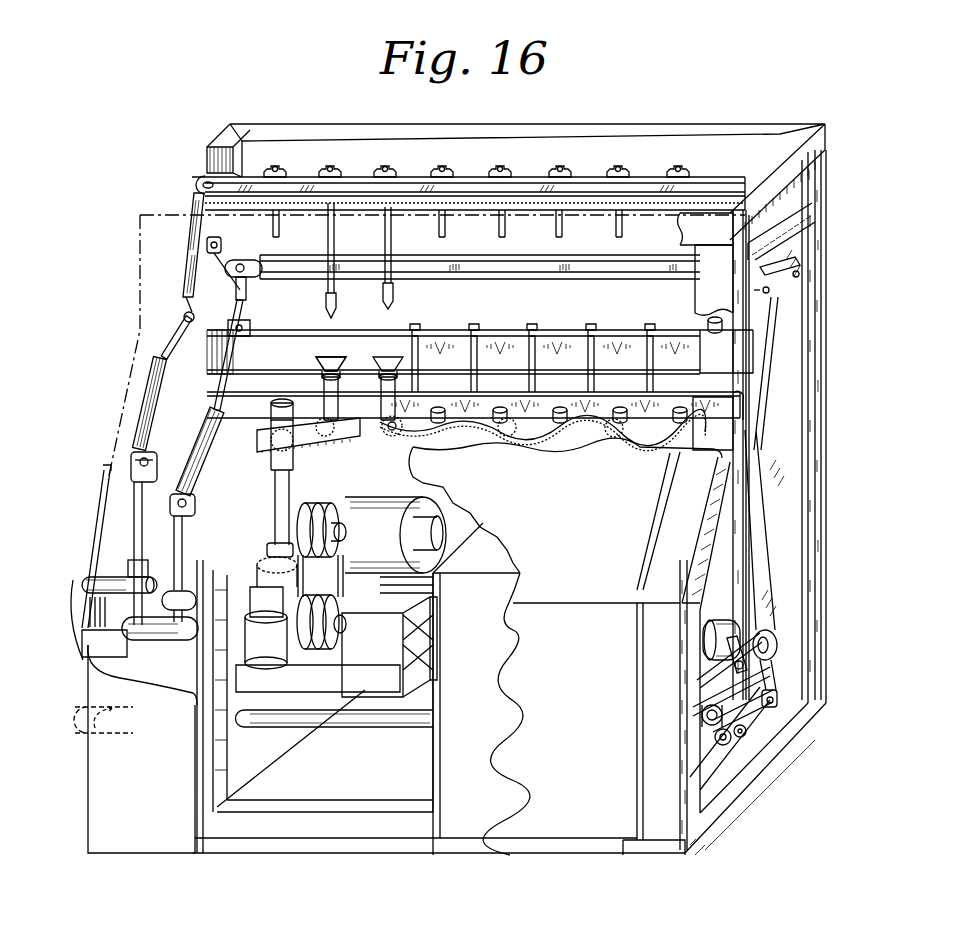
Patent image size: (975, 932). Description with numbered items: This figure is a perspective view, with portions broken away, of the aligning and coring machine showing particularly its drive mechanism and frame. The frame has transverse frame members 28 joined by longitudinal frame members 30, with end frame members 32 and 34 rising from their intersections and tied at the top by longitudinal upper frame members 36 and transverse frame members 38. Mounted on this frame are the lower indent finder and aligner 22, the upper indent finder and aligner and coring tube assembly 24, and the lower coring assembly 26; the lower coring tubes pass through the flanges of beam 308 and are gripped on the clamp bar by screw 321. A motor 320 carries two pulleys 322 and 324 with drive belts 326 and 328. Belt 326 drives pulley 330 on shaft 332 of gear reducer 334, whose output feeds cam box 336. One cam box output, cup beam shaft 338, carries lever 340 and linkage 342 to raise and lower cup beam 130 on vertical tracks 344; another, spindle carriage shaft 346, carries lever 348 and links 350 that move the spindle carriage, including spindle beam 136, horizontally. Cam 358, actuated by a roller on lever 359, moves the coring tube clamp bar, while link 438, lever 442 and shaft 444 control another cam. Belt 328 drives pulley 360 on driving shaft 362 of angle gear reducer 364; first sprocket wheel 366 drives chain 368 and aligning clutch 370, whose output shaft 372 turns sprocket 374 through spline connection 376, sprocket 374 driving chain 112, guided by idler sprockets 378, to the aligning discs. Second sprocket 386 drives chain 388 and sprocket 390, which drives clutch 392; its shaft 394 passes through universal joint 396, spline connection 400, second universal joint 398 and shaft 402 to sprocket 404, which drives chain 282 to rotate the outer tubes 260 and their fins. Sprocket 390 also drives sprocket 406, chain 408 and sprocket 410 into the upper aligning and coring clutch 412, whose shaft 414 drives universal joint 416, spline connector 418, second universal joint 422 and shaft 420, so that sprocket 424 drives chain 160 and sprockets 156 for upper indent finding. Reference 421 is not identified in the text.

The lower indent finder and aligner 22 is at (275, 396).
The upper indent finder and aligner and coring tube assembly 24 is at (405, 246).
The lower coring assembly 26 is at (638, 322).
The transverse frame members 28 is at (725, 805).
The longitudinal frame members 30 is at (446, 852).
The end frame member 32 is at (818, 548).
The end frame member 34 is at (735, 775).
The longitudinal upper frame members 36 is at (663, 128).
The transverse frame members 38 is at (785, 142).
The chain 112 is at (375, 437).
The cup beam 130 is at (540, 412).
The spindle beam 136 is at (411, 268).
The sprocket 156 is at (290, 172).
The drive chain 160 is at (257, 143).
The outer tube 260 is at (336, 250).
The chain 282 is at (235, 287).
The beam 308 is at (494, 345).
The motor 320 is at (420, 505).
The screw 321 is at (268, 332).
The pulley 322 is at (335, 514).
The pulley 324 is at (313, 503).
The drive belt 326 is at (340, 622).
The drive belt 328 is at (339, 533).
The pulley 330 is at (332, 645).
The shaft 332 is at (338, 640).
The gear reducer 334 is at (434, 640).
The cam box 336 is at (472, 675).
The cup beam shaft 338 is at (702, 715).
The lever 340 is at (715, 735).
The linkage 342 is at (737, 602).
The tracks 344 is at (672, 452).
The spindle carriage shaft 346 is at (740, 640).
The lever 348 is at (697, 538).
The links 350 is at (775, 262).
The cam 358 is at (748, 672).
The lever 359 is at (765, 720).
The pulley 360 is at (336, 670).
The driving shaft 362 is at (296, 690).
The angle gear reducer 364 is at (262, 660).
The first sprocket wheel 366 is at (165, 642).
The chain 368 is at (275, 512).
The aligning clutch 370 is at (343, 548).
The output shaft 372 is at (272, 545).
The sprocket 374 is at (307, 437).
The spline connection 376 is at (296, 468).
The idler sprockets 378 is at (288, 478).
The second sprocket 386 is at (100, 675).
The chain 388 is at (257, 568).
The sprocket 390 is at (112, 560).
The clutch 392 is at (177, 585).
The shaft 394 is at (200, 506).
The universal joint 396 is at (196, 496).
The second universal joint 398 is at (184, 317).
The spline connection 400 is at (193, 431).
The shaft 402 is at (236, 300).
The sprocket 404 is at (225, 268).
The sprocket 406 is at (150, 640).
The chain 408 is at (137, 690).
The sprocket 410 is at (100, 600).
The upper aligning and coring clutch 412 is at (183, 536).
The shaft 414 is at (93, 505).
The universal joint 416 is at (140, 455).
The spline connector 418 is at (165, 360).
The shaft 420 is at (186, 214).
The funnel 421 is at (350, 343).
The second universal joint 422 is at (206, 245).
The sprocket 424 is at (192, 185).
The link 438 is at (698, 684).
The lever 442 is at (770, 707).
The shaft 444 is at (700, 740).